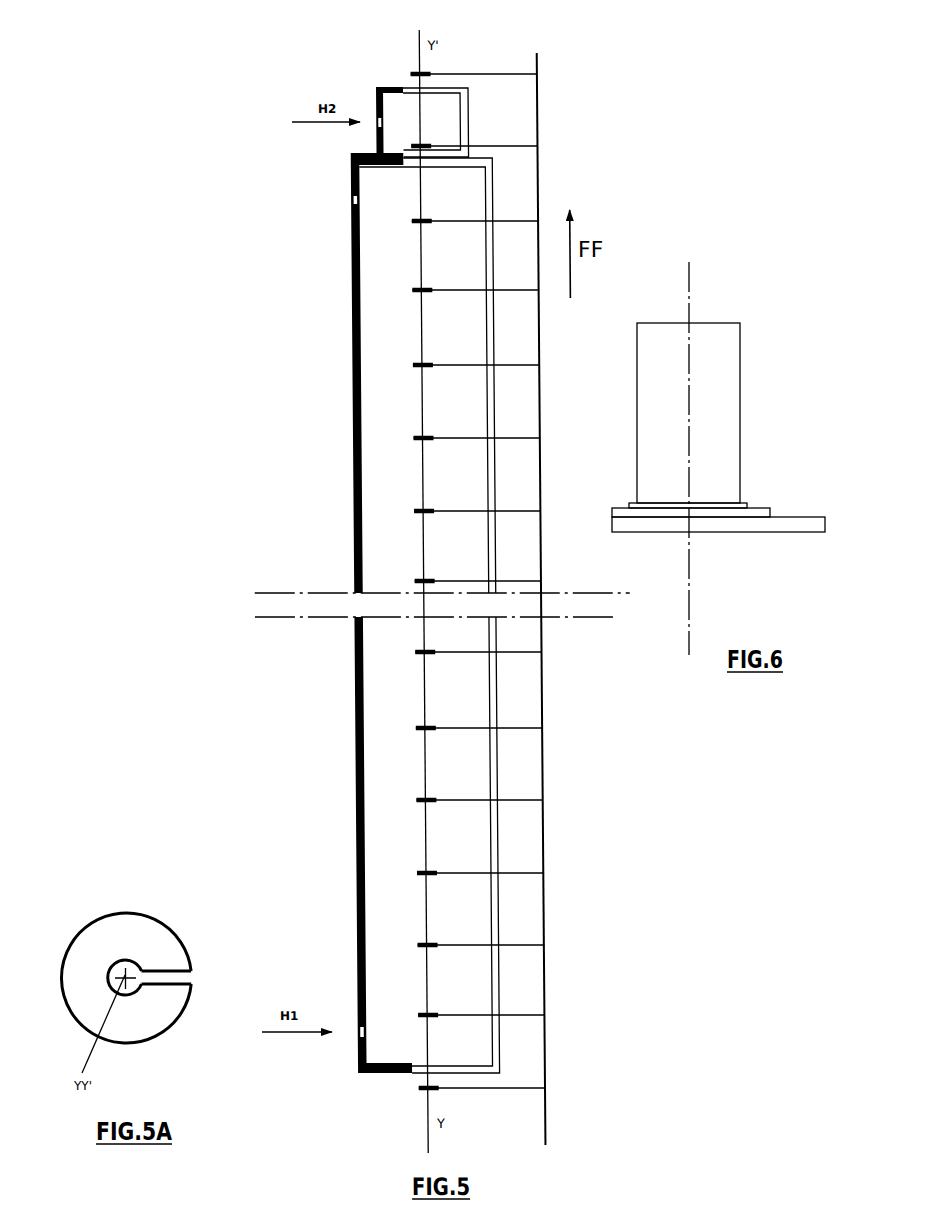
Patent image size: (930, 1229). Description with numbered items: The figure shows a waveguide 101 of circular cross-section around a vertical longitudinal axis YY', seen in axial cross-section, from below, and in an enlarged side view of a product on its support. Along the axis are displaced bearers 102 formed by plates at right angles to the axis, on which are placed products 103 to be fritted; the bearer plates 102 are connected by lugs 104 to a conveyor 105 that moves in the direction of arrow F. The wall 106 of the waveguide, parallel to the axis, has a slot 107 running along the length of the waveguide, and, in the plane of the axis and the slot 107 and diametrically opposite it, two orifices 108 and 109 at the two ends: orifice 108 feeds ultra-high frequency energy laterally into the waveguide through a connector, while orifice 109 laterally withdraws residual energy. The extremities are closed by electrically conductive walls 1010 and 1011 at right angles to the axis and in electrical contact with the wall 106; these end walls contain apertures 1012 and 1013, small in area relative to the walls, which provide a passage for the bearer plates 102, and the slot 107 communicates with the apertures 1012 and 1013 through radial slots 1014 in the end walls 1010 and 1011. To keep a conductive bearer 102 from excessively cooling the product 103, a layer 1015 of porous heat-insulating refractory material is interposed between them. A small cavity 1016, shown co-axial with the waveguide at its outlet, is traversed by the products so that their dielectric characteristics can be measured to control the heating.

In FIG. 5, the waveguide 101 is at (199, 769).
In FIG. 5, the bearer 102 is at (434, 432).
In FIG. 6, the bearer 102 is at (770, 508).
In FIG. 6, the product to be fritted 103 is at (713, 353).
In FIG. 5, the lug 104 is at (448, 289).
In FIG. 6, the lug 104 is at (810, 532).
In FIG. 5, the conveyor 105 is at (542, 764).
In FIG. 5, the wall 106 is at (348, 491).
In FIG. 5A, the wall 106 is at (95, 915).
In FIG. 5A, the slot 107 is at (190, 975).
In FIG. 5, the orifice 108 is at (347, 1037).
In FIG. 5, the orifice 109 is at (350, 200).
In FIG. 5, the wall 1010 is at (383, 1073).
In FIG. 5A, the wall 1010 is at (155, 945).
In FIG. 5, the wall 1011 is at (298, 144).
In FIG. 5, the aperture 1012 is at (428, 1063).
In FIG. 5A, the aperture 1012 is at (125, 961).
In FIG. 5, the aperture 1013 is at (519, 167).
In FIG. 5A, the radial slot 1014 is at (163, 979).
In FIG. 6, the layer of heat-insulating refractory material 1015 is at (630, 505).
In FIG. 5, the cavity 1016 is at (407, 122).